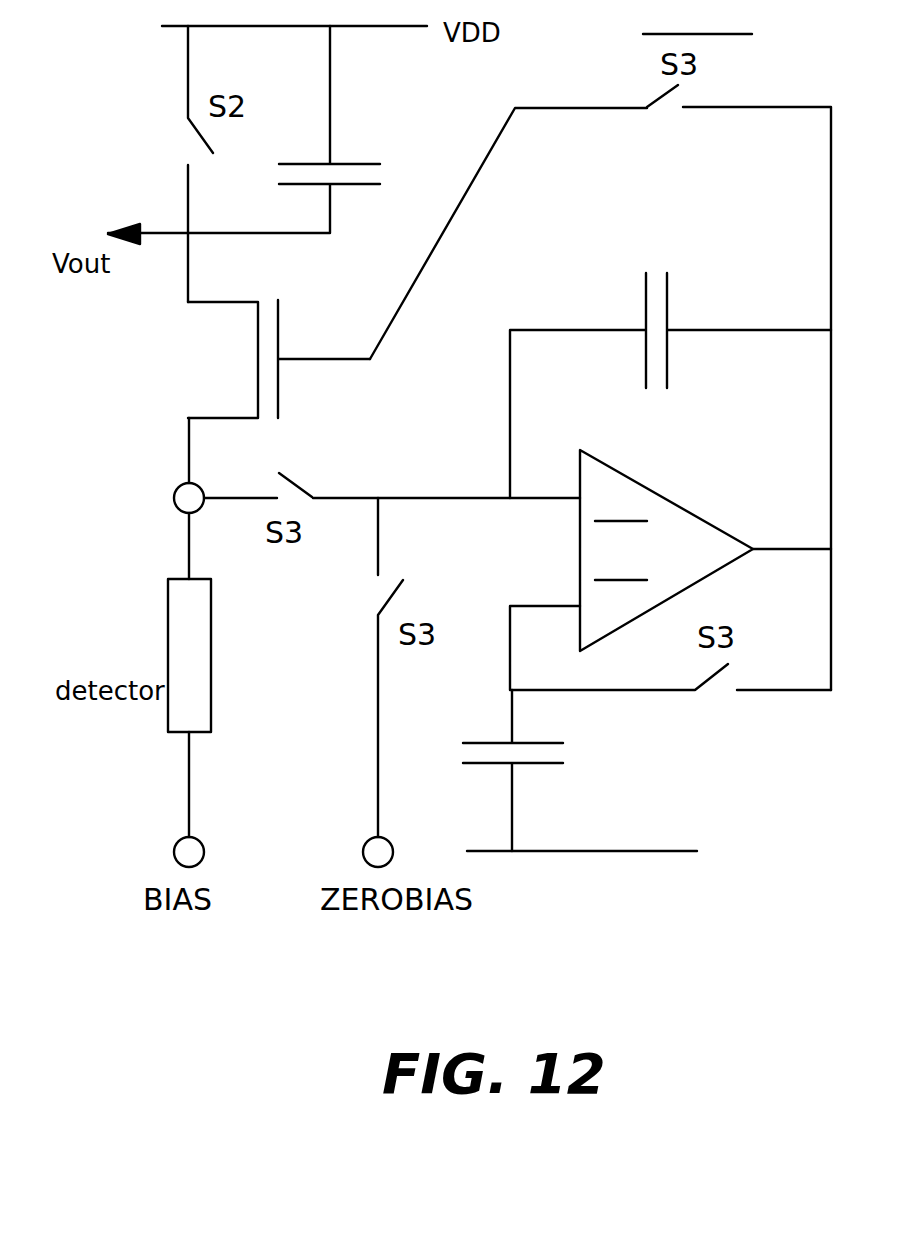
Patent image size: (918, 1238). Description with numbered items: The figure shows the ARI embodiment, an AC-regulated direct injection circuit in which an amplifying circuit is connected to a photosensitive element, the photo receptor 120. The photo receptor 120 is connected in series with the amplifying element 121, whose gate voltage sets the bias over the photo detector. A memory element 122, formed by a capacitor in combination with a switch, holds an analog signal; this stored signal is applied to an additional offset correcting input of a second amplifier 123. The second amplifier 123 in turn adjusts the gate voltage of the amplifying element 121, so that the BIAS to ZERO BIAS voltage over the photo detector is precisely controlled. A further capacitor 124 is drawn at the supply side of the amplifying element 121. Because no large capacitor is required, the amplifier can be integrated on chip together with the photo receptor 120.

The photo receptor 120 is at (167, 652).
The amplifying element 121 is at (227, 359).
The memory element 122 is at (540, 765).
The second amplifier 123 is at (672, 500).
The capacitor 124 is at (355, 163).